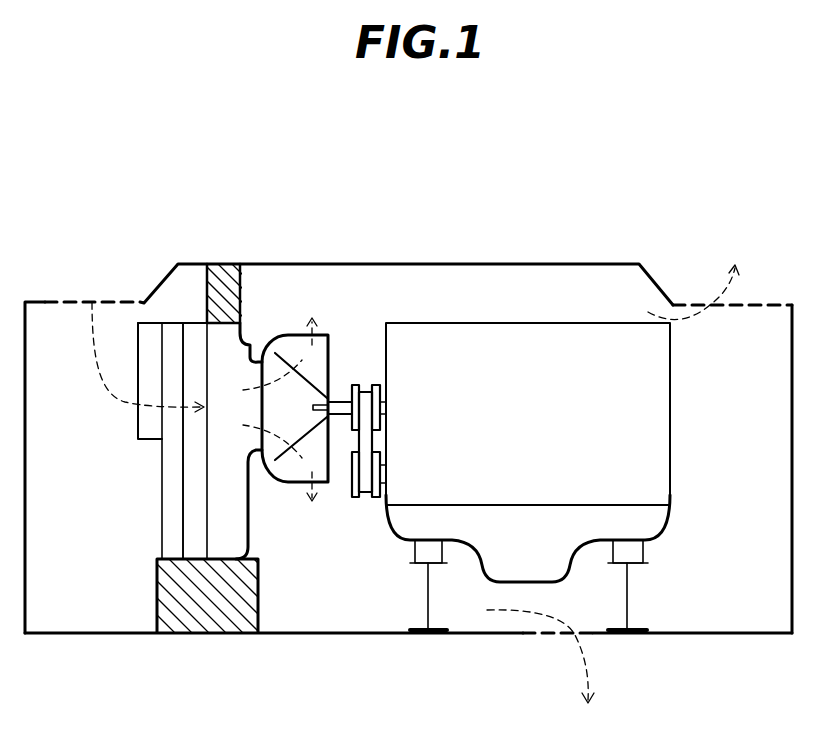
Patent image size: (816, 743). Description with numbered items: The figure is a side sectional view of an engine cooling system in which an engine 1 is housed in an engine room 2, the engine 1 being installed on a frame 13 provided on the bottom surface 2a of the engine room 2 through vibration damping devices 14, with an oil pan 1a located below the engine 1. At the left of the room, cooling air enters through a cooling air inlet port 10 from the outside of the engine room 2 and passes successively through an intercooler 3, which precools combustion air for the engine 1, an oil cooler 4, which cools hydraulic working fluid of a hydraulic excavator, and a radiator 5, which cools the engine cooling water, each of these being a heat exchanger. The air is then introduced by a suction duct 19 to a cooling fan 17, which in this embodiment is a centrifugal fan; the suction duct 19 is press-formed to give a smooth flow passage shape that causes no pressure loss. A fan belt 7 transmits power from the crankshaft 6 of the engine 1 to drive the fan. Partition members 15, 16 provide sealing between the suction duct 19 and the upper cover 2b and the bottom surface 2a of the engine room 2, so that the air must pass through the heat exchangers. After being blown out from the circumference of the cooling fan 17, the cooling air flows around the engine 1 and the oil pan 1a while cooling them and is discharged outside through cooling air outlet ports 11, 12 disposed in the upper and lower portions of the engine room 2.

The engine 1 is at (512, 322).
The oil pan 1a is at (483, 567).
The engine room 2 is at (567, 265).
The bottom surface 2a is at (730, 633).
The upper cover 2b is at (192, 327).
The intercooler 3 is at (148, 347).
The oil cooler 4 is at (173, 343).
The radiator 5 is at (198, 337).
The crankshaft 6 is at (383, 497).
The fan belt 7 is at (363, 493).
The cooling air inlet port 10 is at (93, 302).
The cooling air outlet port 11 is at (707, 305).
The cooling air outlet port 12 is at (537, 635).
The frame 13 is at (425, 612).
The vibration damping devices 14 is at (417, 552).
The partition member 15 is at (244, 290).
The partition member 16 is at (260, 590).
The cooling fan 17 is at (347, 343).
The suction duct 19 is at (248, 343).